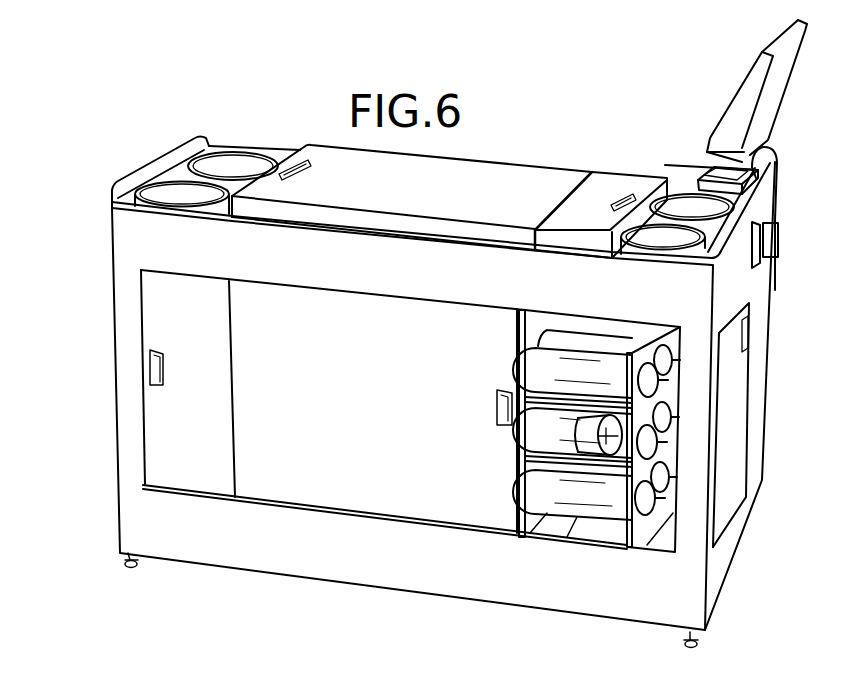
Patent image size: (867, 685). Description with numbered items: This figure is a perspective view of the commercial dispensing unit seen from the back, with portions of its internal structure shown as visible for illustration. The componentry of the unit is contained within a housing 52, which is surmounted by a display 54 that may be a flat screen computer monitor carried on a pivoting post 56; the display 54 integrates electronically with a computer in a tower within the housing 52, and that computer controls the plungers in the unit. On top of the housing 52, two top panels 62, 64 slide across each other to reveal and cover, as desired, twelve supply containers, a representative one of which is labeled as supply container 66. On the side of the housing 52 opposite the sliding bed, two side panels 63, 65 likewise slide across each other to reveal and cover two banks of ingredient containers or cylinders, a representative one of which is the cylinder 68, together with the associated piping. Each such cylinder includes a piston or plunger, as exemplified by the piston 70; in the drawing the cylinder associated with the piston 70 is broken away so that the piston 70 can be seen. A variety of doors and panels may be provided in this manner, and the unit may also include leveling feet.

The housing 52 is at (140, 240).
The display 54 is at (745, 87).
The pivoting post 56 is at (773, 166).
The top panel 62 is at (612, 186).
The side panel 63 is at (172, 400).
The top panel 64 is at (498, 173).
The side panel 65 is at (343, 453).
The supply container 66 is at (243, 166).
The ingredient container or cylinder 68 is at (568, 520).
The piston 70 is at (577, 431).